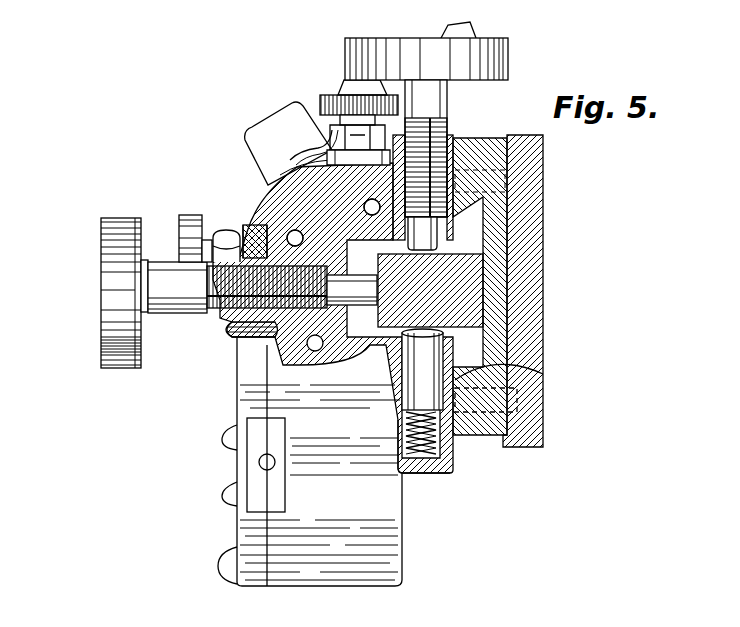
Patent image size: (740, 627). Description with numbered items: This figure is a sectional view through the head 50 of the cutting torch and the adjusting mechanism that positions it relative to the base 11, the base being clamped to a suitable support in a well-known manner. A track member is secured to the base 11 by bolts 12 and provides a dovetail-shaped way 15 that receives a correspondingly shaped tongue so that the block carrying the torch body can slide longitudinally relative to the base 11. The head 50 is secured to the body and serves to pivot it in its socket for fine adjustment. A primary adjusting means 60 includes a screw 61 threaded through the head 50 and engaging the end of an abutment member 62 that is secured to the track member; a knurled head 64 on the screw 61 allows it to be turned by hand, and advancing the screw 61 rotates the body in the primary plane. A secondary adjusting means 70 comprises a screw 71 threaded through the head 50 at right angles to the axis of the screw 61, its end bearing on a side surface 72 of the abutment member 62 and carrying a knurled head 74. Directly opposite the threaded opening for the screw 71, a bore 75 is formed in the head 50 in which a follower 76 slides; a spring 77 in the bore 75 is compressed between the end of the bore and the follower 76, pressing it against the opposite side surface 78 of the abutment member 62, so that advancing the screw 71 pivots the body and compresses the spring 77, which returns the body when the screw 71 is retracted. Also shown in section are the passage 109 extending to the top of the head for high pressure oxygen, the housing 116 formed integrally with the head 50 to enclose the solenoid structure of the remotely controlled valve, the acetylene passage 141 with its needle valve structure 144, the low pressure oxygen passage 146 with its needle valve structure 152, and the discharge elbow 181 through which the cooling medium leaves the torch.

The base 11 is at (528, 248).
The bolts 12 is at (543, 418).
The way 15 is at (530, 368).
The head 50 is at (288, 213).
The primary adjusting means 60 is at (89, 359).
The screw 61 is at (225, 338).
The abutment member 62 is at (465, 285).
The knurled head 64 is at (124, 352).
The secondary adjusting means 70 is at (524, 59).
The screw 71 is at (450, 130).
The side surface 72 is at (455, 250).
The knurled head 74 is at (398, 47).
The bore 75 is at (443, 430).
The follower 76 is at (420, 372).
The spring 77 is at (425, 468).
The side surface 78 is at (543, 350).
The passage 109 is at (315, 350).
The housing 116 is at (390, 545).
The passage 141 is at (277, 242).
The needle valve structure 144 is at (218, 228).
The passage 146 is at (362, 207).
The needle valve structure 152 is at (318, 108).
The discharge elbow 181 is at (268, 135).